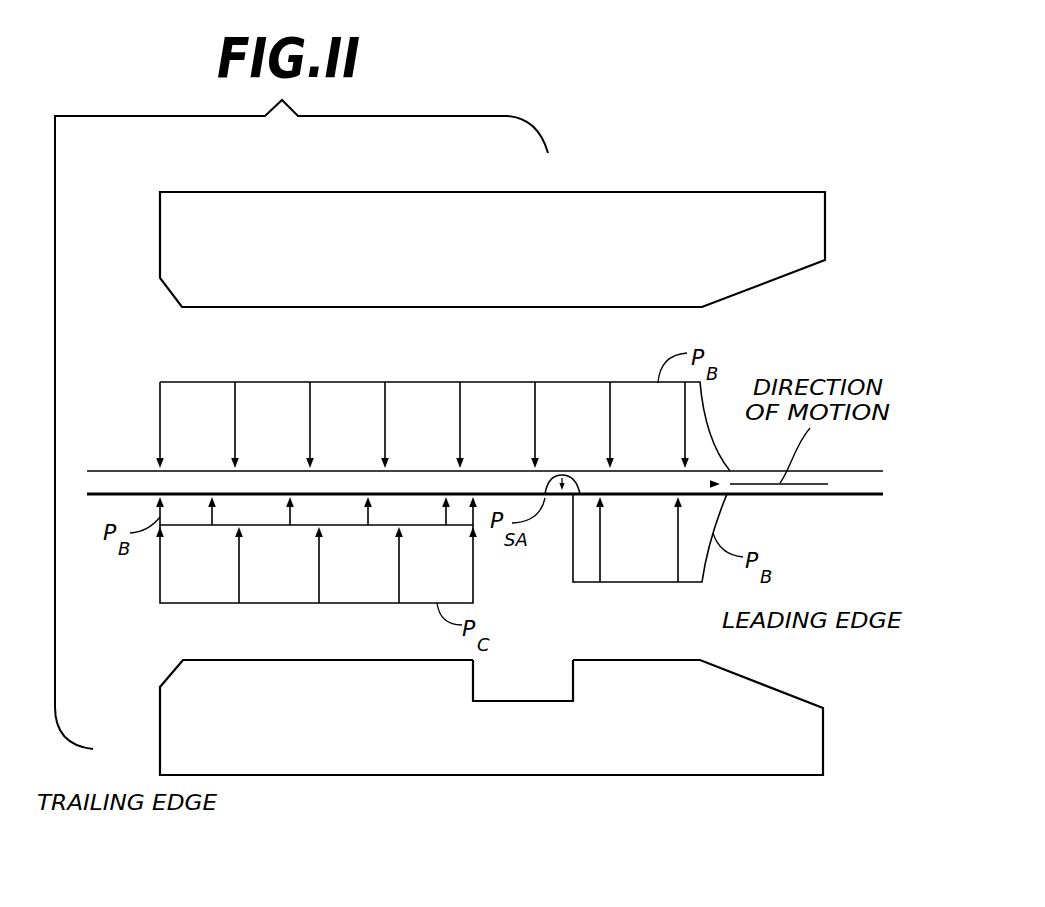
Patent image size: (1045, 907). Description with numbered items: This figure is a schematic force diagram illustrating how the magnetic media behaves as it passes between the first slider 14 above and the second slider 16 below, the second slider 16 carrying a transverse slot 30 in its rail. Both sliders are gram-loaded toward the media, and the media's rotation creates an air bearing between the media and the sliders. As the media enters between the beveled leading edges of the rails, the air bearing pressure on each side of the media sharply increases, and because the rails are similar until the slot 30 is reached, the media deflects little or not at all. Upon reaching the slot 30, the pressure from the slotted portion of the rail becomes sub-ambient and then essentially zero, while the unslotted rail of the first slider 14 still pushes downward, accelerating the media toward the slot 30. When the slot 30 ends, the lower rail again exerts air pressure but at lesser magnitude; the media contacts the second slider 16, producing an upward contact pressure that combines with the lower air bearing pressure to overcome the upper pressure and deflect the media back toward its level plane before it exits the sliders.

The first slider 14 is at (615, 197).
The second slider 16 is at (607, 767).
The slot 30 is at (513, 685).